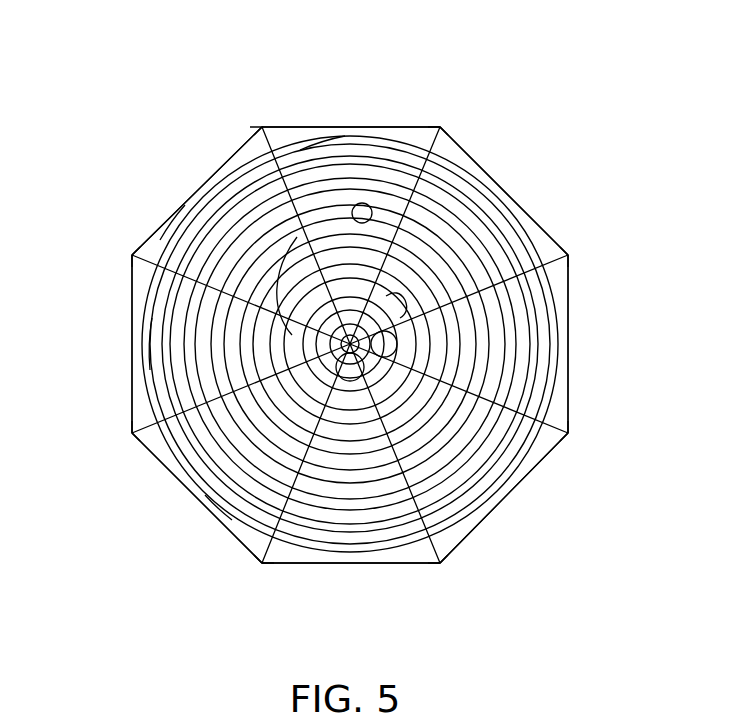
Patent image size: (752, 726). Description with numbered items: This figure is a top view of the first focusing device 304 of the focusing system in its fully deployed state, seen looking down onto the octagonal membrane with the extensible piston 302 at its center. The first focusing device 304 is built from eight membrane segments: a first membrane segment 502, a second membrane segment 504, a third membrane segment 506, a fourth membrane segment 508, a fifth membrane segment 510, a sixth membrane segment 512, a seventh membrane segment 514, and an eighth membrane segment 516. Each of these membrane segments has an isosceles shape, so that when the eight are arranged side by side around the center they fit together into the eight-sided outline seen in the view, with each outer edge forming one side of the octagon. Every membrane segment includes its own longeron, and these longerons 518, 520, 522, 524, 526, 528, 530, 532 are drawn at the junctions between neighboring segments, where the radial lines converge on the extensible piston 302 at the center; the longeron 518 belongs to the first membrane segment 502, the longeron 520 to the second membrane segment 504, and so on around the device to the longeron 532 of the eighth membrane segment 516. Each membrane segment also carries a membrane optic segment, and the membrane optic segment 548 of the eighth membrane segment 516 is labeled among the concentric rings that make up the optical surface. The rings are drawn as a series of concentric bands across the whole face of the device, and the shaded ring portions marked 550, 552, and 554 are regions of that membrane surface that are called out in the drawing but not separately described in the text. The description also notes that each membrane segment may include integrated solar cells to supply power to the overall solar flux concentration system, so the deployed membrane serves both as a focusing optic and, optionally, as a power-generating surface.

The extensible piston 302 is at (452, 243).
The first focusing device 304 is at (286, 72).
The first membrane segment 502 is at (178, 522).
The second membrane segment 504 is at (108, 353).
The third membrane segment 506 is at (198, 162).
The fourth membrane segment 508 is at (366, 110).
The fifth membrane segment 510 is at (523, 180).
The sixth membrane segment 512 is at (590, 334).
The seventh membrane segment 514 is at (528, 510).
The eighth membrane segment 516 is at (340, 603).
The longeron 518 is at (134, 437).
The longeron 520 is at (130, 259).
The longeron 522 is at (256, 127).
The longeron 524 is at (432, 126).
The longeron 526 is at (570, 252).
The longeron 528 is at (572, 430).
The longeron 530 is at (446, 564).
The longeron 532 is at (260, 566).
The membrane optic segment 548 is at (217, 507).
The ring segment 550 is at (152, 388).
The ring segment 552 is at (170, 233).
The ring segment 554 is at (322, 134).